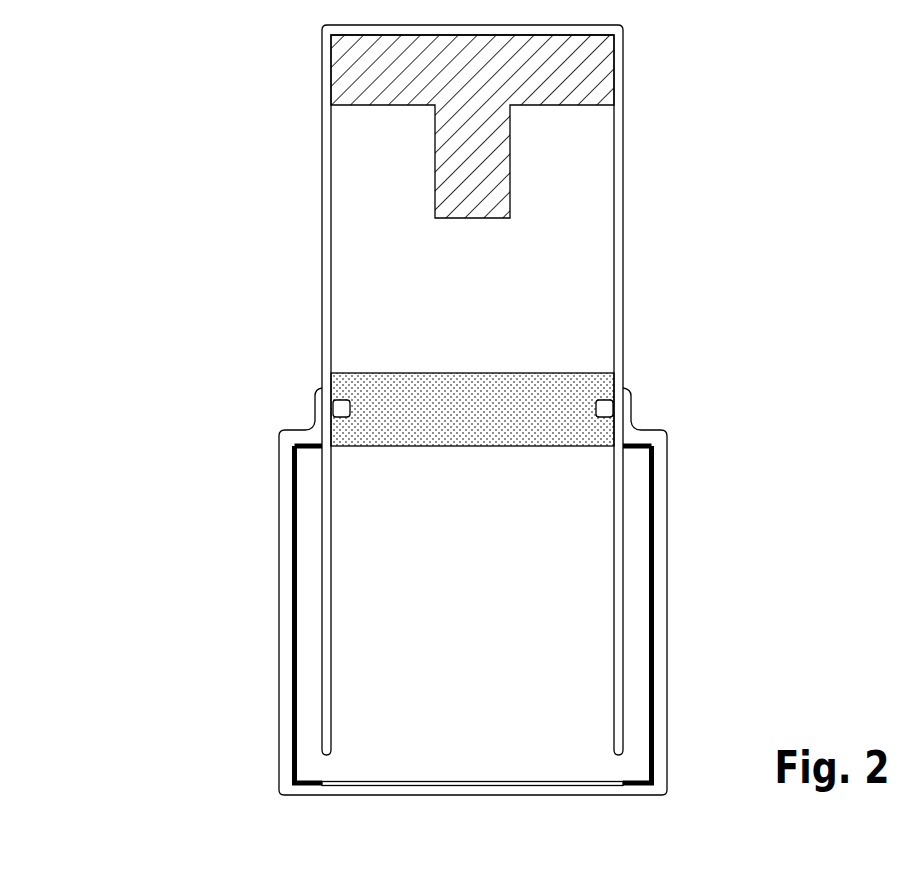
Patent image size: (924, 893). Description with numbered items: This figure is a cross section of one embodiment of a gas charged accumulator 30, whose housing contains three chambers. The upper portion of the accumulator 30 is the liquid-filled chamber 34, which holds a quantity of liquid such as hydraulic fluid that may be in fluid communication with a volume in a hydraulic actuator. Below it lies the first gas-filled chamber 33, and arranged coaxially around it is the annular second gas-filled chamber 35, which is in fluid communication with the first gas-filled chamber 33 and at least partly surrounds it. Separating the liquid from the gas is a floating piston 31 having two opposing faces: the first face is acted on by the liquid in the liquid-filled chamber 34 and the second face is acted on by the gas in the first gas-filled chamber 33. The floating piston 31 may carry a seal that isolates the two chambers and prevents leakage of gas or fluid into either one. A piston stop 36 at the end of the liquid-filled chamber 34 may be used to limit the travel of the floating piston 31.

The accumulator 30 is at (195, 139).
The floating piston 31 is at (447, 447).
The first gas-filled chamber 33 is at (460, 637).
The liquid-filled chamber 34 is at (449, 287).
The annular second gas-filled chamber 35 is at (636, 589).
The piston stop 36 is at (612, 84).